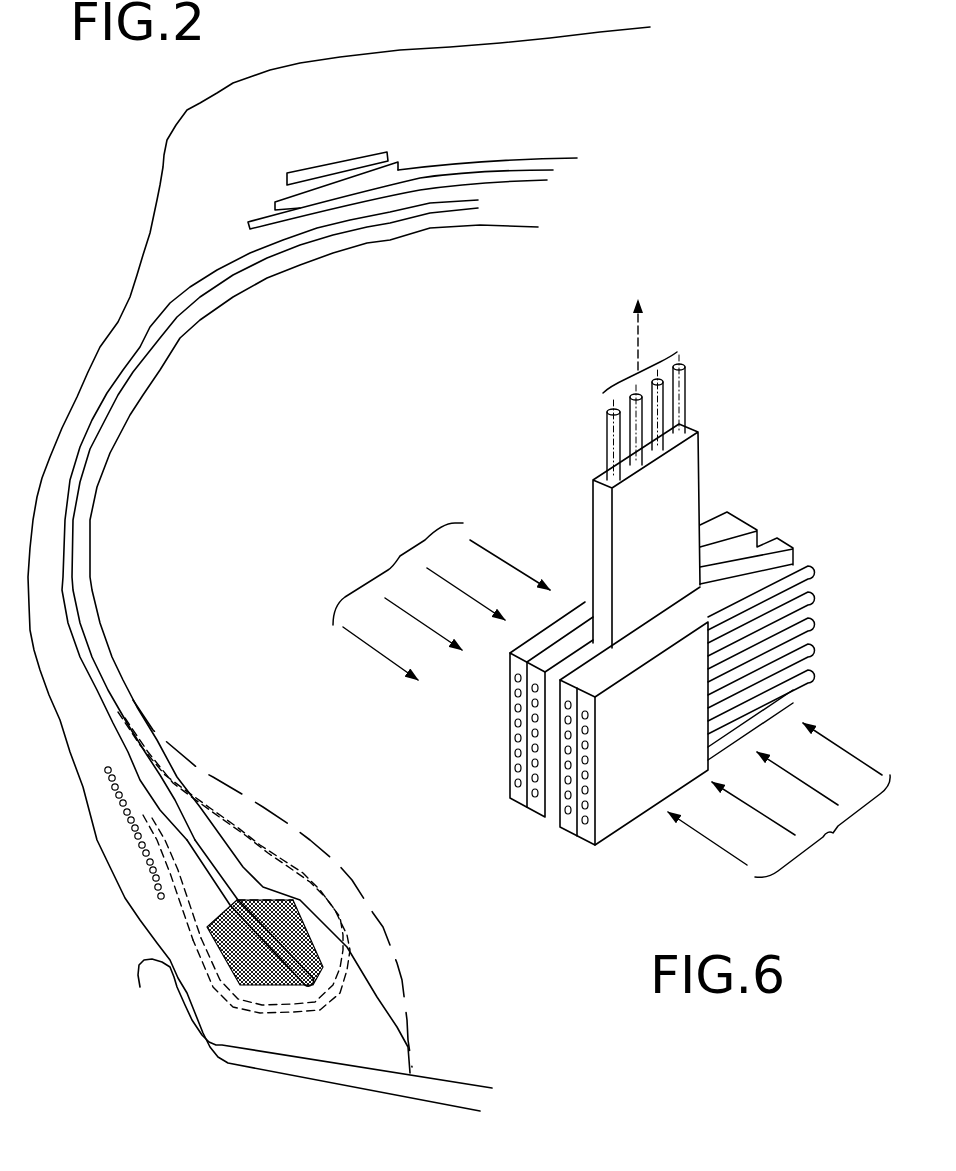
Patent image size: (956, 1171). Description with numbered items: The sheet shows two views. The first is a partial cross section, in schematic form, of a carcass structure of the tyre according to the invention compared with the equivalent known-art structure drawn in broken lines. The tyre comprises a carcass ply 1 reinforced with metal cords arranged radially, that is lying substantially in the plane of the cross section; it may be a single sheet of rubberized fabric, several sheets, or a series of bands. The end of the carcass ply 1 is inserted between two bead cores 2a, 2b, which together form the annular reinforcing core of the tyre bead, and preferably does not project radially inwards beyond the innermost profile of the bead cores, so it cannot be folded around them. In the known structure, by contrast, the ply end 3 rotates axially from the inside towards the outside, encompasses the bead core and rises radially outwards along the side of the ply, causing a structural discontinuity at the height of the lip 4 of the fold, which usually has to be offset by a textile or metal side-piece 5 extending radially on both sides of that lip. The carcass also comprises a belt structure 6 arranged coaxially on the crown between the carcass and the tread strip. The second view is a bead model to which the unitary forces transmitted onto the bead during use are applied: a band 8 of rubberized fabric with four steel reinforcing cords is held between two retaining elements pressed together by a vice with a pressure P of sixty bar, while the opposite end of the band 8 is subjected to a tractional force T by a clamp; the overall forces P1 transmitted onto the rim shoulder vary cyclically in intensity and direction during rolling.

In FIG. 2, the carcass ply 1 is at (63, 522).
In FIG. 2, the bead core 2a is at (307, 938).
In FIG. 2, the bead core 2b is at (255, 970).
In FIG. 2, the end of the carcass ply 3 is at (183, 910).
In FIG. 2, the lip 4 is at (84, 833).
In FIG. 2, the side-piece 5 is at (143, 863).
In FIG. 2, the belt structure 6 is at (248, 153).
In FIG. 6, the band 8 is at (672, 485).
In FIG. 2, the pressure P is at (92, 993).
In FIG. 6, the pressure P is at (779, 805).
In FIG. 6, the forces P1 is at (441, 580).
In FIG. 6, the tractional force T is at (641, 336).